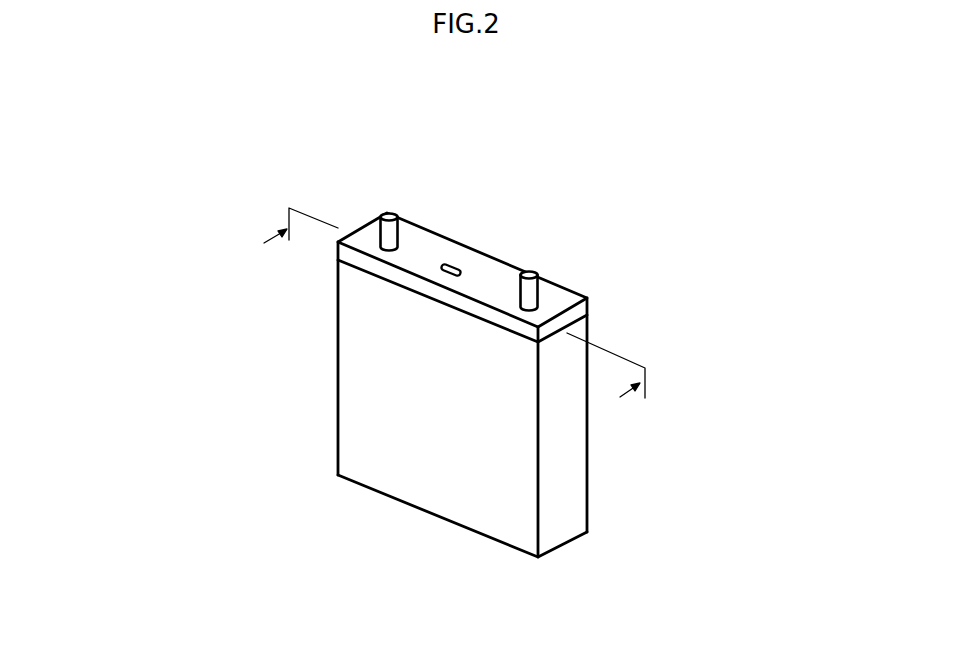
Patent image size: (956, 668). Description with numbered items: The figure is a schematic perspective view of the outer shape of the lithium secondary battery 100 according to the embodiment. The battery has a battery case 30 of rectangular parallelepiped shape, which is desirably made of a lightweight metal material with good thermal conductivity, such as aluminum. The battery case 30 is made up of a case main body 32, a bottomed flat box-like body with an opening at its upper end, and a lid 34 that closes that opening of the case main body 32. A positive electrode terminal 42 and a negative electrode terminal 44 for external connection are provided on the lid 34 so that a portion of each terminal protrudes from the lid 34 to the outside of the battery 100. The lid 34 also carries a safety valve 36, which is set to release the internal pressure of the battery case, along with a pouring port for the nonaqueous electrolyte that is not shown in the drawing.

The battery 100 is at (699, 177).
The battery case 30 is at (509, 406).
The case main body 32 is at (578, 500).
The lid 34 is at (583, 311).
The safety valve 36 is at (450, 265).
The positive electrode terminal 42 is at (390, 215).
The negative electrode terminal 44 is at (530, 273).